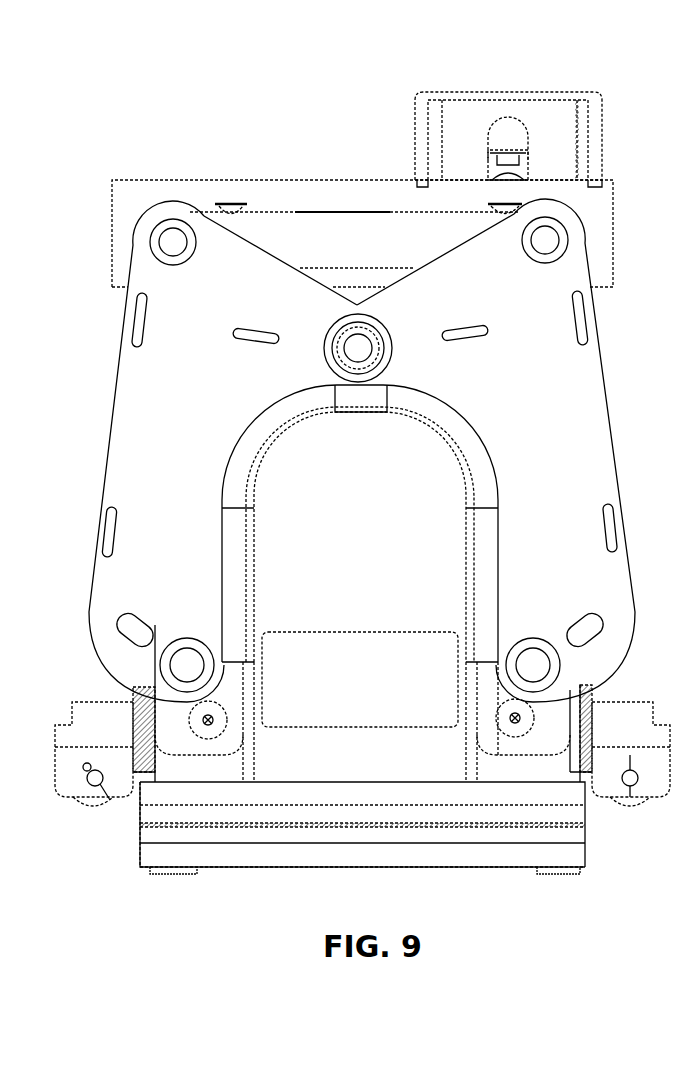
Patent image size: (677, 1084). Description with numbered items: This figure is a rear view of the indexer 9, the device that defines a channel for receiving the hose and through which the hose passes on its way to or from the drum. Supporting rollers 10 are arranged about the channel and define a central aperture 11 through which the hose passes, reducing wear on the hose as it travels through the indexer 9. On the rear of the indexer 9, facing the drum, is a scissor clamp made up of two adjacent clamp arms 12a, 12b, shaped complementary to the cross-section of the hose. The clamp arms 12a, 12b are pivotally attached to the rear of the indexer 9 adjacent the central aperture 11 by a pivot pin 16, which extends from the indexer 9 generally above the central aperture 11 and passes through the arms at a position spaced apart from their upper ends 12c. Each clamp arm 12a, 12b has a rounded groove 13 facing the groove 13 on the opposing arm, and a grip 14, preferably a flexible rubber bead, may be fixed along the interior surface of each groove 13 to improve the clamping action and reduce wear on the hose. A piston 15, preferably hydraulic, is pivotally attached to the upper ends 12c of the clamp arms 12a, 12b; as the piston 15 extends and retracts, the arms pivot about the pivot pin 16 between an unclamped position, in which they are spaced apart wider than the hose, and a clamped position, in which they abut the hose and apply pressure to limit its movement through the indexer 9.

The indexer 9 is at (223, 157).
The supporting rollers 10 is at (427, 725).
The central aperture 11 is at (373, 477).
The clamp arm 12a is at (112, 447).
The clamp arm 12b is at (608, 425).
The upper end 12c is at (153, 192).
The rounded groove 13 is at (428, 473).
The grip 14 is at (405, 410).
The piston 15 is at (320, 212).
The pivot pin 16 is at (358, 320).